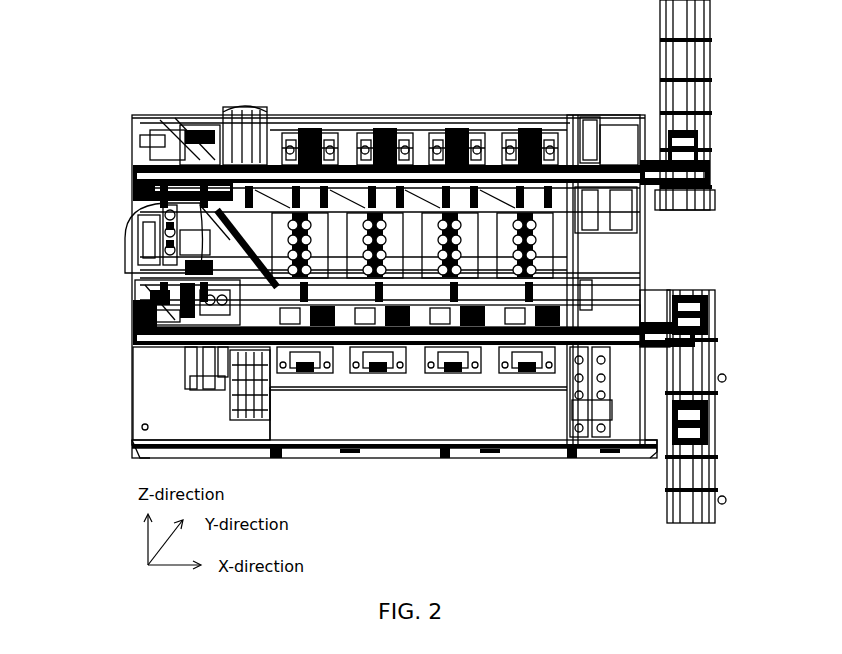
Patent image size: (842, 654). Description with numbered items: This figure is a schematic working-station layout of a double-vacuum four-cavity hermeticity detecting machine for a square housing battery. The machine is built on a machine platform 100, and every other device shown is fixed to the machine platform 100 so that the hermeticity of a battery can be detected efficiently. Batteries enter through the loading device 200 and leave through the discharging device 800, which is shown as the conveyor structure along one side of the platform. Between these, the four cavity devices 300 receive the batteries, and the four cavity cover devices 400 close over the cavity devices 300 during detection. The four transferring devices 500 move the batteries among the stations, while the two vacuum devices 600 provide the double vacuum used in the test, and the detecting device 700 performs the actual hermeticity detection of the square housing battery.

The machine platform 100 is at (132, 420).
The loading device 200 is at (525, 460).
The cavity devices 300 is at (470, 460).
The cavity cover devices 400 is at (540, 222).
The transferring devices 500 is at (497, 115).
The vacuum devices 600 is at (165, 205).
The detecting device 700 is at (130, 303).
The discharging device 800 is at (565, 115).